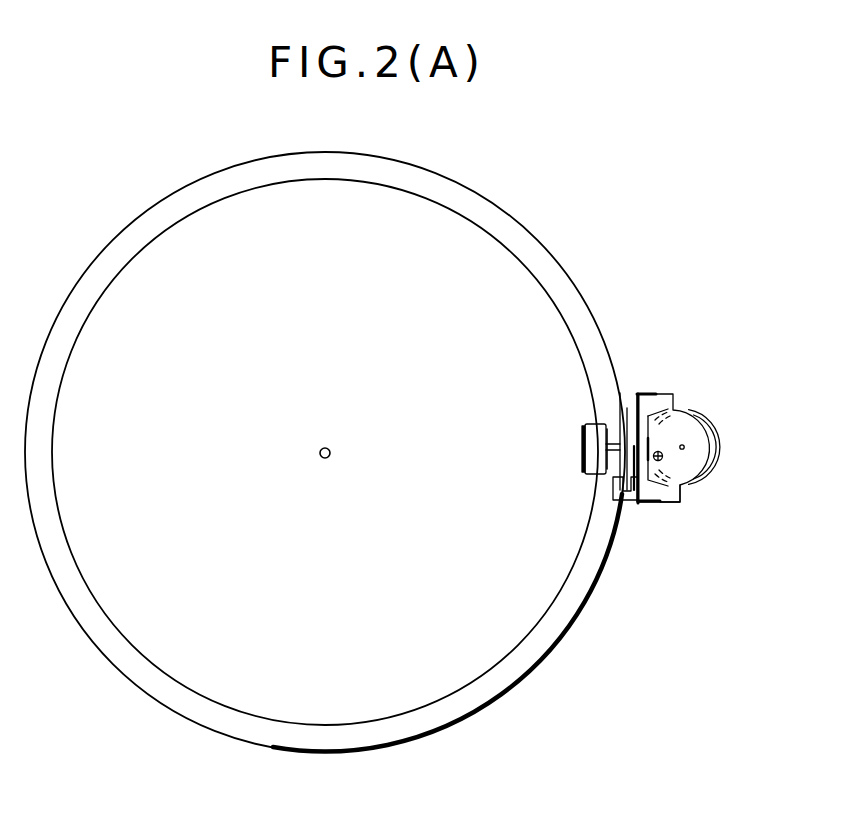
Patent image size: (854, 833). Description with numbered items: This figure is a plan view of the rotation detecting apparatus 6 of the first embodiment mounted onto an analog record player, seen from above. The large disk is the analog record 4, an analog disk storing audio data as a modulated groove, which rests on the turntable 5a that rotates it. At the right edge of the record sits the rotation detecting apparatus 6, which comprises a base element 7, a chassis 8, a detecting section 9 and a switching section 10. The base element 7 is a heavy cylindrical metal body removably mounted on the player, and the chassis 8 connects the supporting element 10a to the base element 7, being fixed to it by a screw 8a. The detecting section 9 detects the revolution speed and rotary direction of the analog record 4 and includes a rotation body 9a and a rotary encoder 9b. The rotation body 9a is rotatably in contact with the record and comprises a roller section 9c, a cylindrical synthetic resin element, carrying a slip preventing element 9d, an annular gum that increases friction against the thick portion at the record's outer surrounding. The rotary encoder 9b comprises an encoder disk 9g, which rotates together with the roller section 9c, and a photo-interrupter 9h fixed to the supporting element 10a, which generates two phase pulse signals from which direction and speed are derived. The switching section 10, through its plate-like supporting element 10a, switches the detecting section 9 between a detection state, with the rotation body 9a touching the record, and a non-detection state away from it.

The analog record 4 is at (553, 585).
The turntable 5a is at (542, 645).
The rotation detecting apparatus 6 is at (698, 498).
The base element 7 is at (720, 460).
The chassis 8 is at (708, 445).
The screw 8a is at (658, 452).
The detecting section 9 is at (573, 441).
The rotation body 9a is at (562, 456).
The rotary encoder 9b is at (653, 517).
The roller section 9c is at (583, 449).
The slip preventing element 9d is at (590, 437).
The encoder disk 9g is at (632, 410).
The photo-interrupter 9h is at (633, 505).
The switching section 10 is at (695, 445).
The supporting element 10a is at (642, 407).